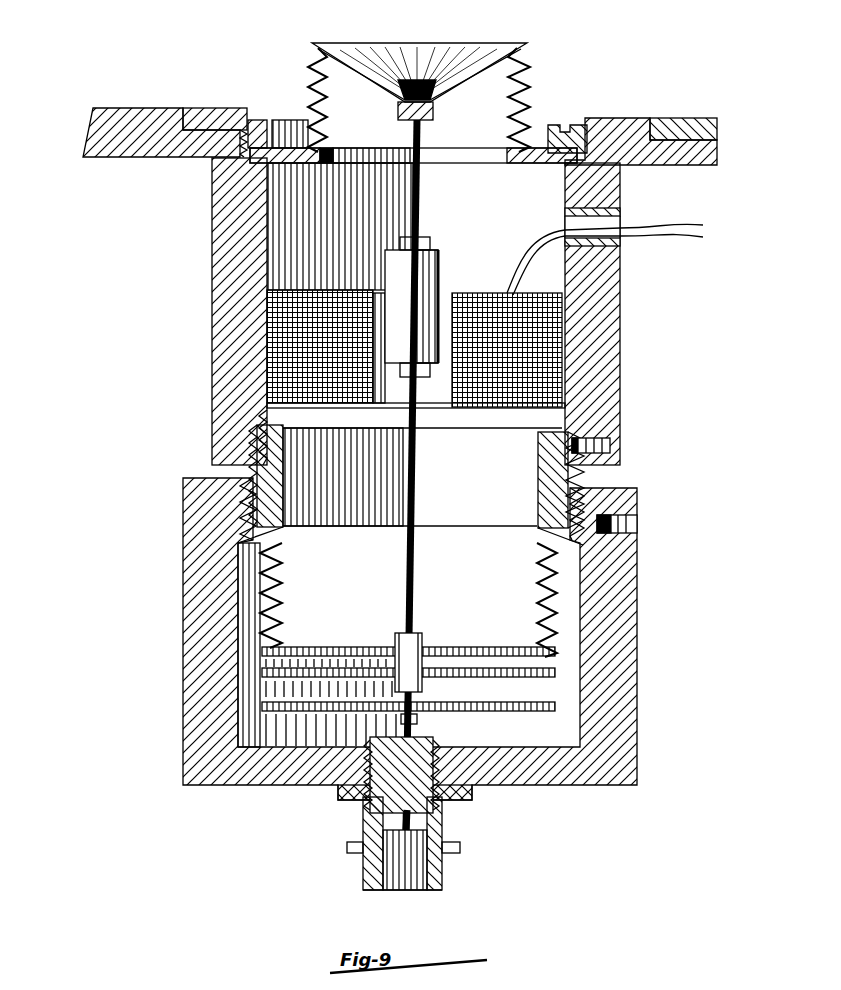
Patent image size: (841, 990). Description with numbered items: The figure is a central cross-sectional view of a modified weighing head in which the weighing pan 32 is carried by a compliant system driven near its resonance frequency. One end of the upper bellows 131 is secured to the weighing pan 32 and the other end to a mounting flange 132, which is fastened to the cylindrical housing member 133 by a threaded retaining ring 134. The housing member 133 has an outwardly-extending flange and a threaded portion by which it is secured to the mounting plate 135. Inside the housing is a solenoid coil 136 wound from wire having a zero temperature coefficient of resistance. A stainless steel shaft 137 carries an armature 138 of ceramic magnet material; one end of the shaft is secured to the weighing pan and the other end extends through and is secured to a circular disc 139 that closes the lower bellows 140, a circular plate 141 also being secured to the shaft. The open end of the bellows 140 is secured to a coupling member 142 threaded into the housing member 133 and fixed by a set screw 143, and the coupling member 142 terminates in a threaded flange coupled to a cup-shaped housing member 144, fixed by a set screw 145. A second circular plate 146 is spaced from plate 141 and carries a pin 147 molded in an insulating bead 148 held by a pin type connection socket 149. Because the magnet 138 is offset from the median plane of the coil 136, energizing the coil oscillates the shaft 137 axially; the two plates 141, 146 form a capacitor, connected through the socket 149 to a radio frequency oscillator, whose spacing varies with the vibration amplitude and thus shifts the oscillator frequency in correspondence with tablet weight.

The weighing pan 32 is at (355, 43).
The upper bellows 131 is at (530, 73).
The mounting flange 132 is at (478, 163).
The cylindrical housing member 133 is at (620, 283).
The threaded retaining ring 134 is at (557, 125).
The mounting plate 135 is at (668, 118).
The solenoid coil 136 is at (520, 398).
The stainless steel shaft 137 is at (420, 453).
The armature 138 is at (442, 258).
The circular disc 139 is at (498, 647).
The bellows 140 is at (537, 573).
The circular plate 141 is at (555, 677).
The coupling member 142 is at (538, 482).
The set screw 143 is at (615, 440).
The cup-shaped housing member 144 is at (637, 557).
The set screw 145 is at (636, 520).
The second circular plate 146 is at (513, 715).
The pin 147 is at (413, 722).
The insulating bead 148 is at (383, 800).
The pin type connection socket 149 is at (460, 848).